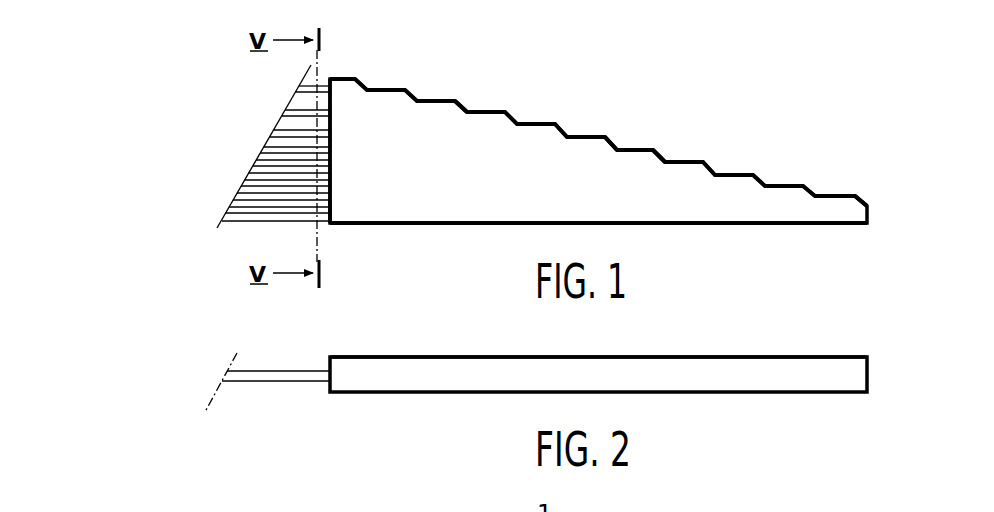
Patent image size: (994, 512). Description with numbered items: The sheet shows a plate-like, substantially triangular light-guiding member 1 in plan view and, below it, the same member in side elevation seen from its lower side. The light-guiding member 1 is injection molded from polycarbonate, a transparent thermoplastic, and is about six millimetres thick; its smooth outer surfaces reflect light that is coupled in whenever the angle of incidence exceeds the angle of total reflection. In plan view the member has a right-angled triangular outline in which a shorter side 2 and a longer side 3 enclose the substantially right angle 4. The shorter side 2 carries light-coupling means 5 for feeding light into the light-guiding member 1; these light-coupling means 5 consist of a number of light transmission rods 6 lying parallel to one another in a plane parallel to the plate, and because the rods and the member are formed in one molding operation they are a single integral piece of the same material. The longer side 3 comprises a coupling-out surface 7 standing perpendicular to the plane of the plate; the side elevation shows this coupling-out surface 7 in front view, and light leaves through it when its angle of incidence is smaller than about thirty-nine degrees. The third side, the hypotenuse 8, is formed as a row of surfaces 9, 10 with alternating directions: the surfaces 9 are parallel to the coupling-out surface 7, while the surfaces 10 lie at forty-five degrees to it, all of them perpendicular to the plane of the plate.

In FIG. 1, the light-guiding member 1 is at (510, 205).
In FIG. 2, the light-guiding member 1 is at (436, 403).
In FIG. 1, the shorter side 2 is at (332, 123).
In FIG. 1, the longer side 3 is at (690, 224).
In FIG. 1, the right angle 4 is at (335, 223).
In FIG. 1, the light-coupling means 5 is at (243, 245).
In FIG. 1, the light transmission rods 6 is at (295, 103).
In FIG. 2, the light transmission rods 6 is at (290, 375).
In FIG. 1, the coupling-out surface 7 is at (763, 224).
In FIG. 2, the coupling-out surface 7 is at (738, 362).
In FIG. 1, the hypotenuse 8 is at (547, 104).
In FIG. 1, the surfaces parallel to coupling-out surface 9 is at (632, 149).
In FIG. 1, the surfaces at 45 degrees 10 is at (465, 108).